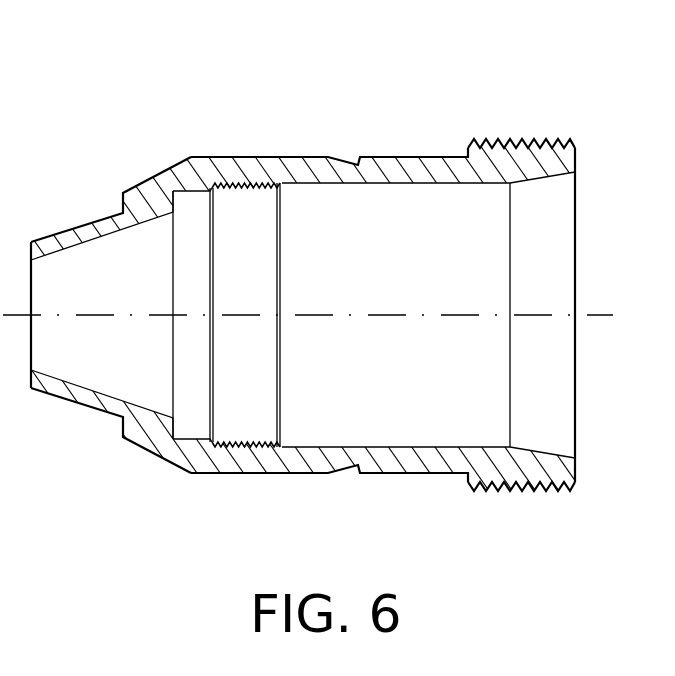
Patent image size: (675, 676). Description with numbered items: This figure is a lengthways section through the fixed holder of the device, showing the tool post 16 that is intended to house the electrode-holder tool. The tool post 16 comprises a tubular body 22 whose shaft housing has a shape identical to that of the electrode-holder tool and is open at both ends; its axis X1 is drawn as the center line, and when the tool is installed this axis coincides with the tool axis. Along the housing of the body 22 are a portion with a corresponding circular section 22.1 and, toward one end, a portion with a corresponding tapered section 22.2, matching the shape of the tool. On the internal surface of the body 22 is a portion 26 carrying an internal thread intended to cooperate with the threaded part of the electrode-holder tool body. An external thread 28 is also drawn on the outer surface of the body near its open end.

The tool post 16 is at (252, 138).
The tubular body 22 is at (412, 166).
The portion with circular section 22.1 is at (386, 449).
The portion with tapered section 22.2 is at (67, 388).
The portion with internal thread 26 is at (231, 447).
The external thread 28 is at (520, 160).
The shaft housing axis X1 is at (589, 318).